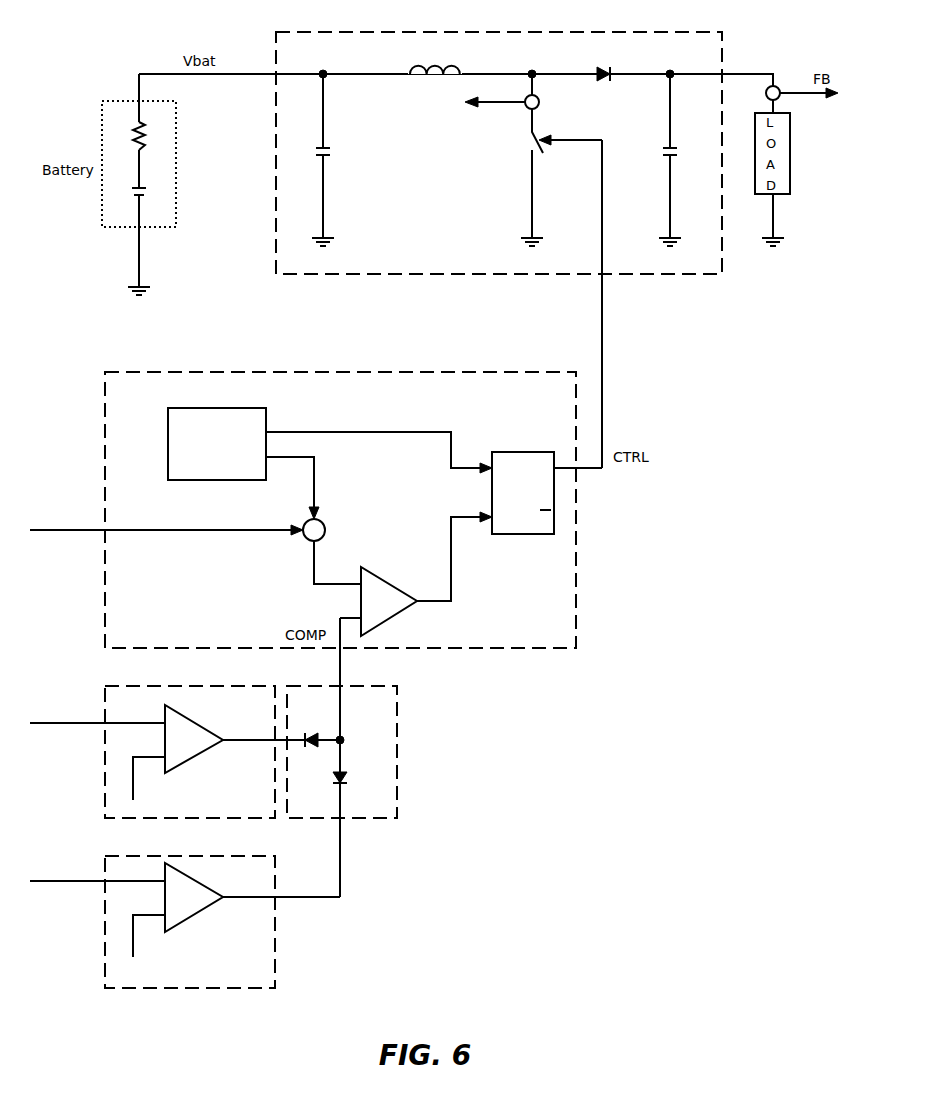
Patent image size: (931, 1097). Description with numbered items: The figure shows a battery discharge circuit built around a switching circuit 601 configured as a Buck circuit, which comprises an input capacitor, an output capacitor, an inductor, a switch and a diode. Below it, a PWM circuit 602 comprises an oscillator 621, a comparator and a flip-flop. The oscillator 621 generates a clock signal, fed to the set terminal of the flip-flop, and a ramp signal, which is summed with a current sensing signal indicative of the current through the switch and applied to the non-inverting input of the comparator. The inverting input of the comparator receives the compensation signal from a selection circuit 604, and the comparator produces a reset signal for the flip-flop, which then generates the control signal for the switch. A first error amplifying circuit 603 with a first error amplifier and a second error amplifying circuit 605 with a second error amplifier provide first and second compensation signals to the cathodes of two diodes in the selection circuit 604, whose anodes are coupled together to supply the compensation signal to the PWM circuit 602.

The switching circuit 601 is at (306, 274).
The PWM circuit 602 is at (316, 523).
The first error amplifying circuit 603 is at (119, 823).
The selection circuit 604 is at (314, 823).
The second error amplifying circuit 605 is at (119, 994).
The oscillator 621 is at (187, 484).